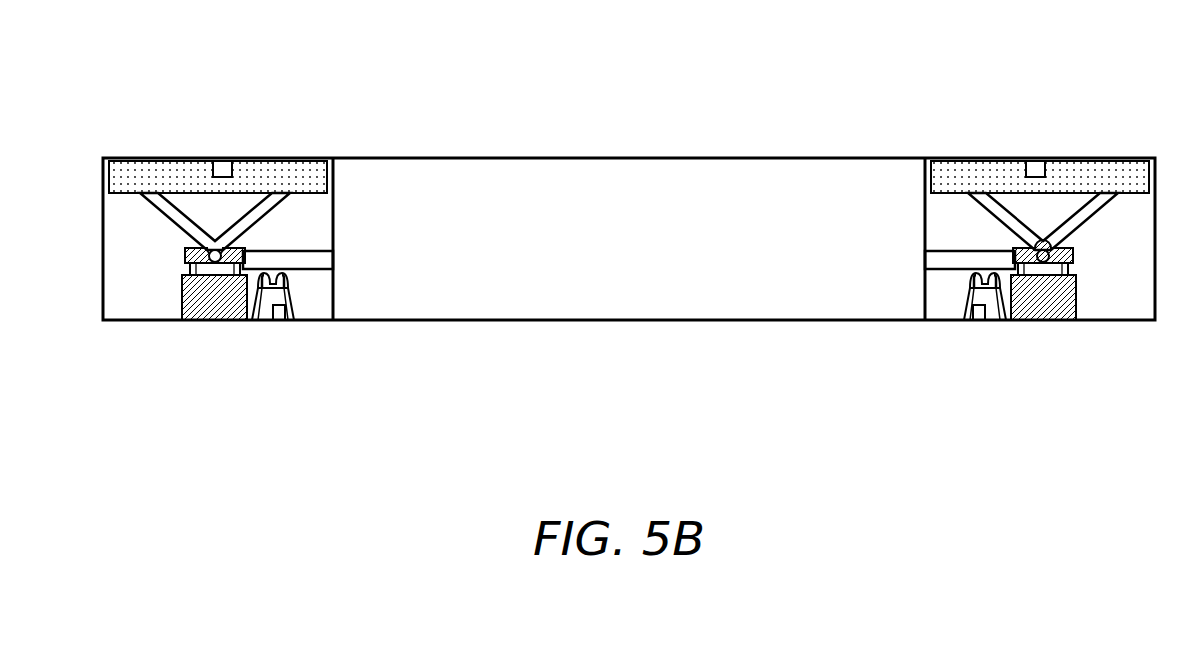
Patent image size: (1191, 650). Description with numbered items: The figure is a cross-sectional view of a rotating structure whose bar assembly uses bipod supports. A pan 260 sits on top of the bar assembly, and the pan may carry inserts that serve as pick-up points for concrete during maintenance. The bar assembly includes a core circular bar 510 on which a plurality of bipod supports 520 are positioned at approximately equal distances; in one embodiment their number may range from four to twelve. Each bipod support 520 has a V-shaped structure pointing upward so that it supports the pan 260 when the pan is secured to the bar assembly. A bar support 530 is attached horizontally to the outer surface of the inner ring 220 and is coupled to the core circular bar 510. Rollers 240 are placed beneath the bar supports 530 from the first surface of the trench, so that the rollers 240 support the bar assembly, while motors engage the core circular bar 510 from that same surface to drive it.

The inner ring 220 is at (692, 307).
The roller 240 is at (290, 297).
The pan 260 is at (125, 167).
The core circular bar 510 is at (205, 262).
The bipod support 520 is at (163, 210).
The bar support 530 is at (305, 262).